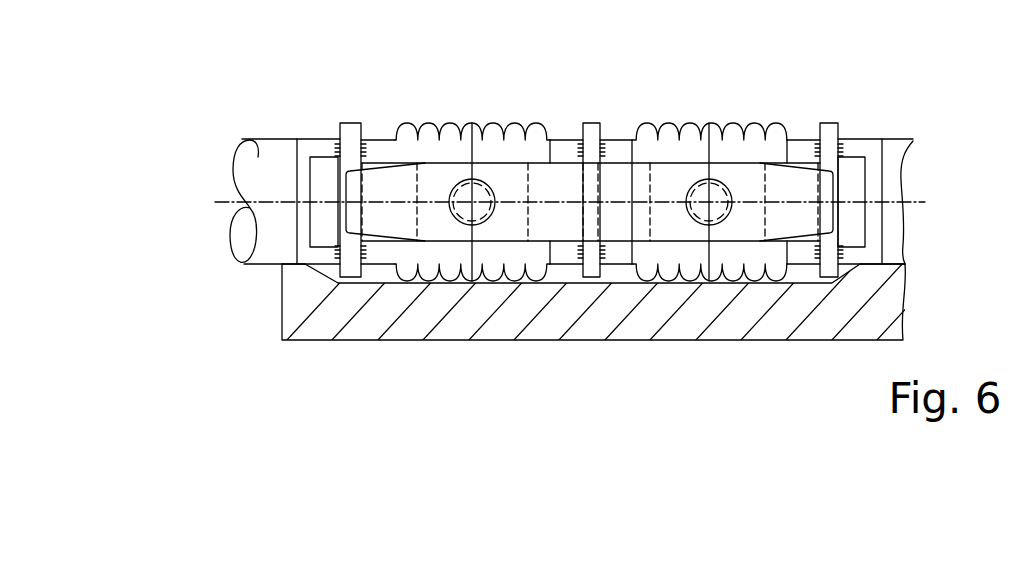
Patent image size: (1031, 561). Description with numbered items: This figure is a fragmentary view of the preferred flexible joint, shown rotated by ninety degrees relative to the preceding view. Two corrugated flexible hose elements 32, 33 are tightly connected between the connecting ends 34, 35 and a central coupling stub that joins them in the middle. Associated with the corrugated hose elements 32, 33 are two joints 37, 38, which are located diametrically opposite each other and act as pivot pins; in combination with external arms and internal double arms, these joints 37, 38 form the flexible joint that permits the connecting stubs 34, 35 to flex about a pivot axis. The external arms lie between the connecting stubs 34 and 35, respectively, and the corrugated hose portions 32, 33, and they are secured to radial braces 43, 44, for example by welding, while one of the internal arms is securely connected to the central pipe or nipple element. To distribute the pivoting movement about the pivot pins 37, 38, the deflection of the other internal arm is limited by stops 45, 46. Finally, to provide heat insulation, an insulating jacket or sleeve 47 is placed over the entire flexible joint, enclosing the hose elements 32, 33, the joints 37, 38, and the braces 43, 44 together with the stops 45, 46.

The flexible hose element 32 is at (443, 121).
The flexible hose element 33 is at (700, 126).
The connecting end 34 is at (250, 138).
The connecting end 35 is at (900, 149).
The joint 37 is at (478, 190).
The joint 38 is at (718, 183).
The radial brace 43 is at (338, 218).
The radial brace 44 is at (838, 226).
The stop 45 is at (343, 124).
The stop 46 is at (840, 126).
The insulating jacket 47 is at (467, 315).